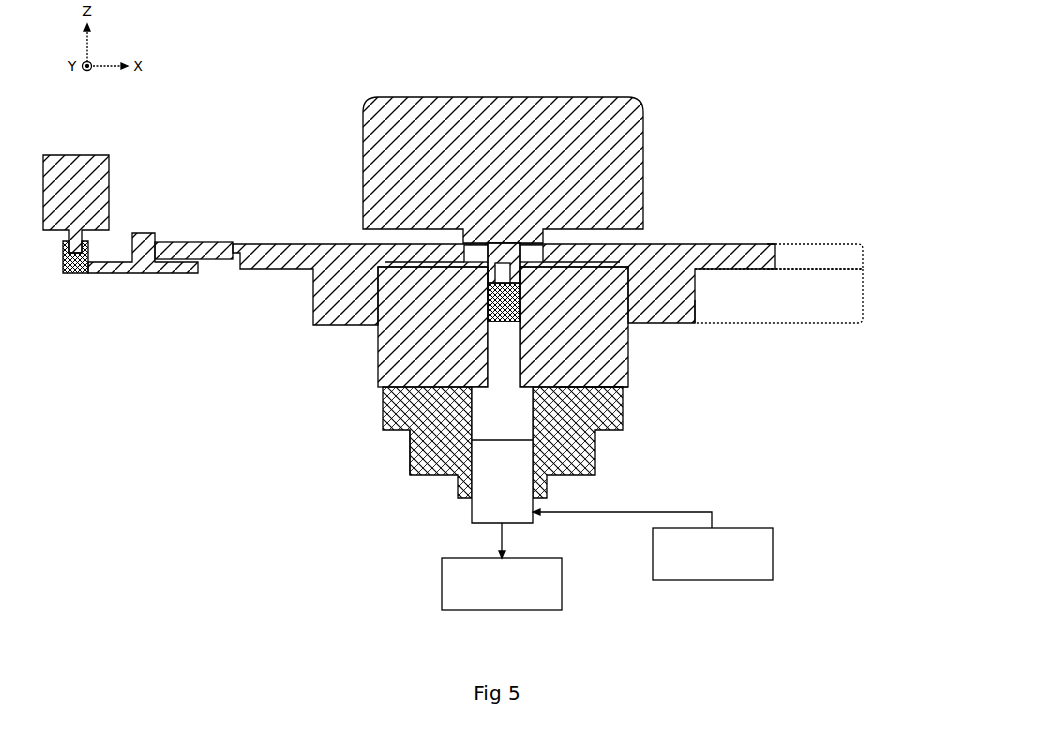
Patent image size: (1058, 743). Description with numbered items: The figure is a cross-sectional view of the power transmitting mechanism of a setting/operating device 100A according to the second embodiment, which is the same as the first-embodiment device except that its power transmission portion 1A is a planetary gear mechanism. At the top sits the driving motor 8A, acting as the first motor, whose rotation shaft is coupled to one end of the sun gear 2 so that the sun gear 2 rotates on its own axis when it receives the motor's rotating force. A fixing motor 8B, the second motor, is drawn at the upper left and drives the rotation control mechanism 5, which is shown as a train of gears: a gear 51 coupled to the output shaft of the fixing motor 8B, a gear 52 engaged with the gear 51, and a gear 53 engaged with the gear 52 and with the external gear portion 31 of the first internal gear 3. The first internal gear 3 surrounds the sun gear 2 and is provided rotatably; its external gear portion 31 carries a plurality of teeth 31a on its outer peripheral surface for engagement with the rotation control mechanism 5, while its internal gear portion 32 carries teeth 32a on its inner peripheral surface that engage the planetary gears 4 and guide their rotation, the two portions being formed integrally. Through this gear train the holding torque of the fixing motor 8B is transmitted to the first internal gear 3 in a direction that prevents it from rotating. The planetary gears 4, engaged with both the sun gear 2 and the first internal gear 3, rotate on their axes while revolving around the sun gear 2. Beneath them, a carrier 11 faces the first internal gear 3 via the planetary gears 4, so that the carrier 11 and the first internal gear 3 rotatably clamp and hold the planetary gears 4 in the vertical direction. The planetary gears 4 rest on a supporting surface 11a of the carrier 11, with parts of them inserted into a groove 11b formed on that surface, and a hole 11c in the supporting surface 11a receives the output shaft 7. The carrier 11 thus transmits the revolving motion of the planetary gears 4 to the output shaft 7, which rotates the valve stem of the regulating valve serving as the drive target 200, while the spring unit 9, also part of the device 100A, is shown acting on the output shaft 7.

The setting/operating device 100A is at (905, 51).
The power transmission portion 1A is at (769, 243).
The sun gear 2 is at (563, 265).
The first internal gear 3 is at (802, 283).
The external gear portion 31 is at (866, 245).
The teeth 31a is at (777, 247).
The internal gear portion 32 is at (866, 270).
The teeth 32a is at (695, 313).
The planetary gears 4 is at (378, 346).
The rotation control mechanism 5 is at (147, 303).
The gear 51 is at (75, 275).
The gear 52 is at (137, 275).
The gear 53 is at (194, 295).
The output shaft 7 is at (472, 511).
The driving motor 8A is at (510, 97).
The fixing motor 8B is at (78, 155).
The spring unit 9 is at (773, 557).
The carrier 11 is at (595, 455).
The supporting surface 11a is at (623, 388).
The groove 11b is at (628, 375).
The hole 11c is at (472, 430).
The drive target 200 is at (442, 578).